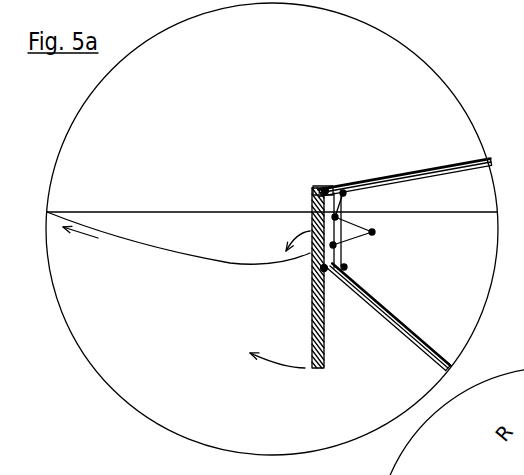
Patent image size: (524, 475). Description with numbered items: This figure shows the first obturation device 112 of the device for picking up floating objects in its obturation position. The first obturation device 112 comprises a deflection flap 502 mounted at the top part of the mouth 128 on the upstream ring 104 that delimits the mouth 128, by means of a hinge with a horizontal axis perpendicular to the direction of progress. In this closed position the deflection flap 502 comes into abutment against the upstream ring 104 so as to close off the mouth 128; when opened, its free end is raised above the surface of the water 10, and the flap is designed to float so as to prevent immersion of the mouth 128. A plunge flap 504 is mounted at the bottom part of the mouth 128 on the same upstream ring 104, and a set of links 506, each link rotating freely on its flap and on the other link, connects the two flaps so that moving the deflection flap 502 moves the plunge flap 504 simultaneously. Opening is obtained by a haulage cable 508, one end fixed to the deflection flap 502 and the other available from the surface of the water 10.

The surface of the water 10 is at (147, 378).
The first obturation device 112 is at (260, 111).
The haulage cable 508 is at (48, 211).
The mouth 128 is at (298, 222).
The deflection flap 502 is at (311, 297).
The upstream ring 104 is at (331, 188).
The plunge flap 504 is at (344, 202).
The set of links 506 is at (374, 236).